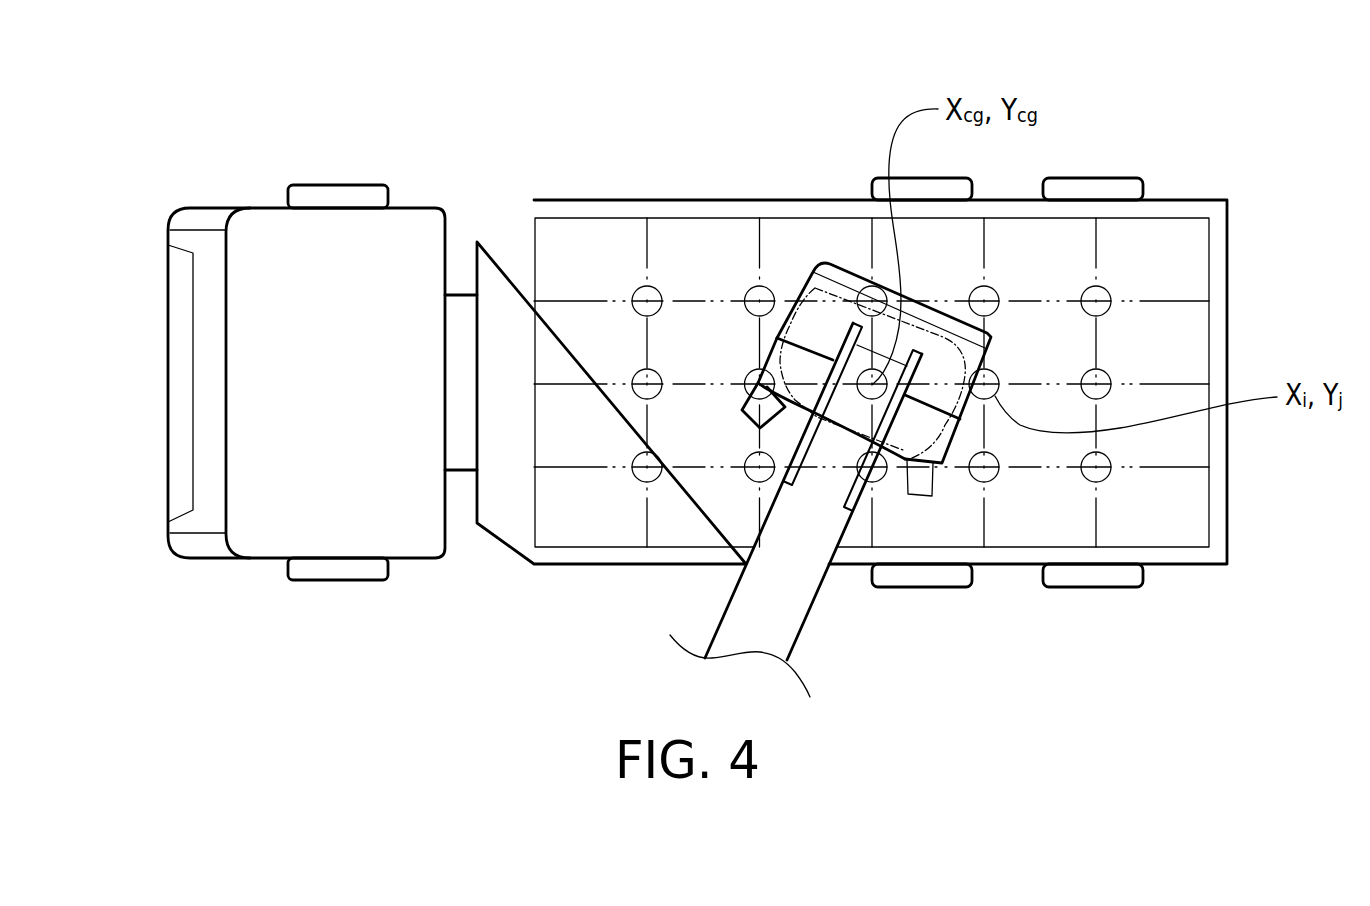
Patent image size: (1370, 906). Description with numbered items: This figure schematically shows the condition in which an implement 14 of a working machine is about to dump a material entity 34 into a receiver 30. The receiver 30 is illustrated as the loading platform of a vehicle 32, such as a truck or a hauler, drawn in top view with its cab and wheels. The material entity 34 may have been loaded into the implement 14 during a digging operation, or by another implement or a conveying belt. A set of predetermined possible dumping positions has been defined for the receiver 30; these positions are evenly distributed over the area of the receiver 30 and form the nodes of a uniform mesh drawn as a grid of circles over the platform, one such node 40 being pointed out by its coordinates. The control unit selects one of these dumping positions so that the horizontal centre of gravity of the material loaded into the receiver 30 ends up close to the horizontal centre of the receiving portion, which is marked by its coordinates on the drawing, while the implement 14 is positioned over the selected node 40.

The implement 14 is at (877, 395).
The receiver 30 is at (897, 341).
The vehicle 32 is at (185, 135).
The material entity 34 is at (842, 265).
The anchor point 40 is at (1107, 373).